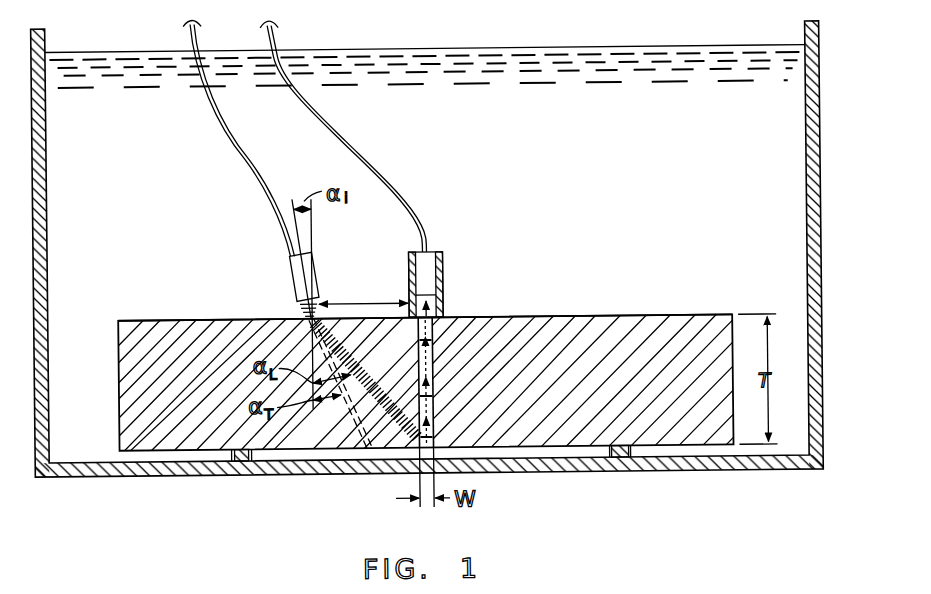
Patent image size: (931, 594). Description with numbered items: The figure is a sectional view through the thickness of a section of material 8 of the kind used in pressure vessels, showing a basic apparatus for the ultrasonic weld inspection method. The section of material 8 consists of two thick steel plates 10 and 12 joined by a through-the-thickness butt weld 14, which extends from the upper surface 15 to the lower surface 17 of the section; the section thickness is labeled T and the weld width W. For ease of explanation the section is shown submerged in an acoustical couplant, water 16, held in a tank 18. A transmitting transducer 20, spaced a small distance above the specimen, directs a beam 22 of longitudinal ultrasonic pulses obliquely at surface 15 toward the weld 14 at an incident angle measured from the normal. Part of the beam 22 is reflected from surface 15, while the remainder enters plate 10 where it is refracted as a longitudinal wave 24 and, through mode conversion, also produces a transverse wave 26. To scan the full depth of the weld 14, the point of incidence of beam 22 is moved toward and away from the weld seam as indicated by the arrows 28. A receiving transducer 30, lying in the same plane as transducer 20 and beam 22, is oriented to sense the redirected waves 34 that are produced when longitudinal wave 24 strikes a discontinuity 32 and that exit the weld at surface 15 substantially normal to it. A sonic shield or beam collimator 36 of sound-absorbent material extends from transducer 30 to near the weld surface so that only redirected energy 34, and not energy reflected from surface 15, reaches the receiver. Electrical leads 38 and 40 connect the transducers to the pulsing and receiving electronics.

The section of material 8 is at (139, 310).
The steel plate 10 is at (425, 384).
The steel plate 12 is at (425, 384).
The butt weld 14 is at (435, 353).
The surface 15 is at (607, 316).
The water 16 is at (425, 88).
The surface 17 is at (170, 450).
The tank 18 is at (816, 114).
The transmitting transducer 20 is at (290, 273).
The beam of ultrasonic pulses 22 is at (303, 315).
The longitudinal wave 24 is at (364, 371).
The transverse wave 26 is at (349, 421).
The arrows 28 is at (363, 292).
The receiving transducer 30 is at (443, 263).
The discontinuity 32 is at (414, 340).
The redirected ultrasonic waves 34 is at (436, 326).
The sonic shield or beam collimator 36 is at (445, 303).
The electrical lead 38 is at (283, 37).
The electrical lead 40 is at (192, 38).